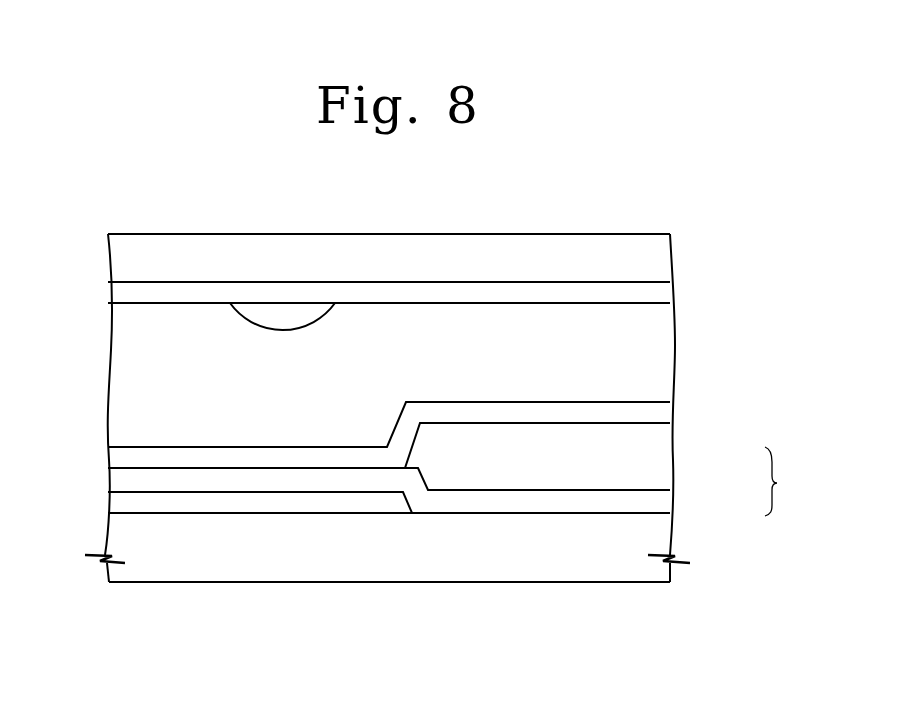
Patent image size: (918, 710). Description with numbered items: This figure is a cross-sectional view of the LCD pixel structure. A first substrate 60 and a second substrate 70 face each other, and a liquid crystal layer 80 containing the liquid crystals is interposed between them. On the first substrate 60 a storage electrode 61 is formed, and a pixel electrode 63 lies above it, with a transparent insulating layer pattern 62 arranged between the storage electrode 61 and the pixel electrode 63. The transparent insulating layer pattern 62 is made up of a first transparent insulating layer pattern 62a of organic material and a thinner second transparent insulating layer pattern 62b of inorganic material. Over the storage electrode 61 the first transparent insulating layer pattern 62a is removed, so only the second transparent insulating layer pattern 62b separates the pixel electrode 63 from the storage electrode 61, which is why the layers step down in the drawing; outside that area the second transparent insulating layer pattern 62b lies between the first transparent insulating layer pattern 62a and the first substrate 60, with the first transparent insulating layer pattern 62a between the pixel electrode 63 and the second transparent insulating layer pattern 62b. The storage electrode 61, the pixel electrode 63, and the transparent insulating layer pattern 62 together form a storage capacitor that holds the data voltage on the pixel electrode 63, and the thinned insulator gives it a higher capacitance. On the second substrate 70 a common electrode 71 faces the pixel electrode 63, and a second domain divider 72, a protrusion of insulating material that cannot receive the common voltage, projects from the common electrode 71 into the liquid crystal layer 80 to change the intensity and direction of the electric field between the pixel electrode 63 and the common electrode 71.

The first substrate 60 is at (658, 542).
The storage electrode 61 is at (120, 504).
The transparent insulating layer pattern 62 is at (786, 481).
The first transparent insulating layer pattern 62a is at (658, 460).
The second transparent insulating layer pattern 62b is at (658, 503).
The pixel electrode 63 is at (658, 413).
The second substrate 70 is at (658, 263).
The common electrode 71 is at (658, 293).
The second domain divider 72 is at (283, 322).
The liquid crystal layer 80 is at (658, 367).